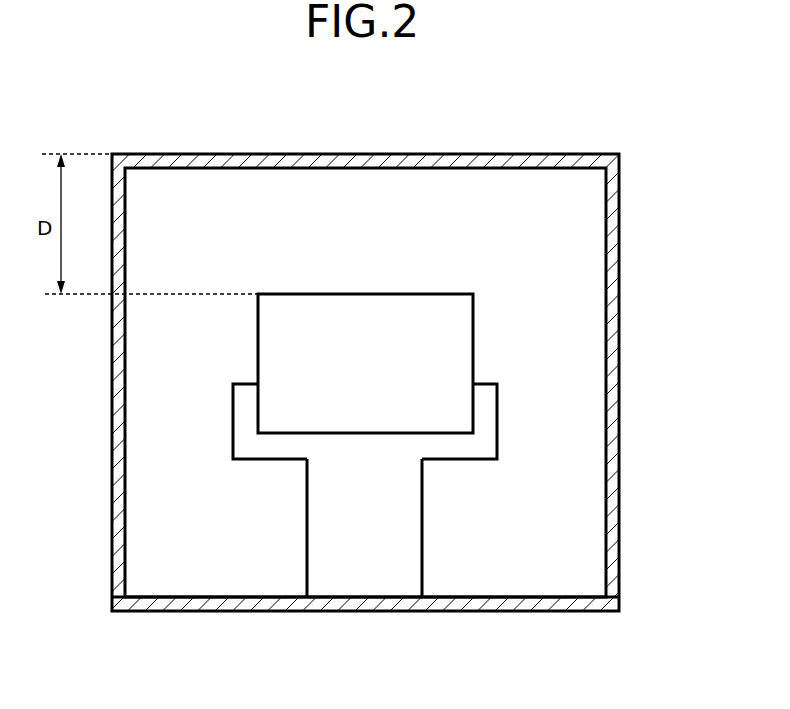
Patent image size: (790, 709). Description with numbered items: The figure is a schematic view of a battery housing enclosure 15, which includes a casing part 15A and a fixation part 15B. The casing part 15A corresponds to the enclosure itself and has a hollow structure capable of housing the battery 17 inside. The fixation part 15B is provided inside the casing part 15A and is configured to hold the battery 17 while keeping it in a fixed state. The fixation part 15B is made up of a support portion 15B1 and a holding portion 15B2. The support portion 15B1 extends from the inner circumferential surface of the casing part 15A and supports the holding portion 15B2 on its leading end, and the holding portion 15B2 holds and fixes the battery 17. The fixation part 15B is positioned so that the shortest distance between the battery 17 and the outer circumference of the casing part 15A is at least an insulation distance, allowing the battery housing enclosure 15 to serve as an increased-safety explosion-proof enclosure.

The battery housing enclosure 15 is at (540, 153).
The casing part 15A is at (558, 604).
The fixation part 15B is at (470, 530).
The support portion 15B1 is at (403, 513).
The holding portion 15B2 is at (486, 413).
The battery 17 is at (362, 294).